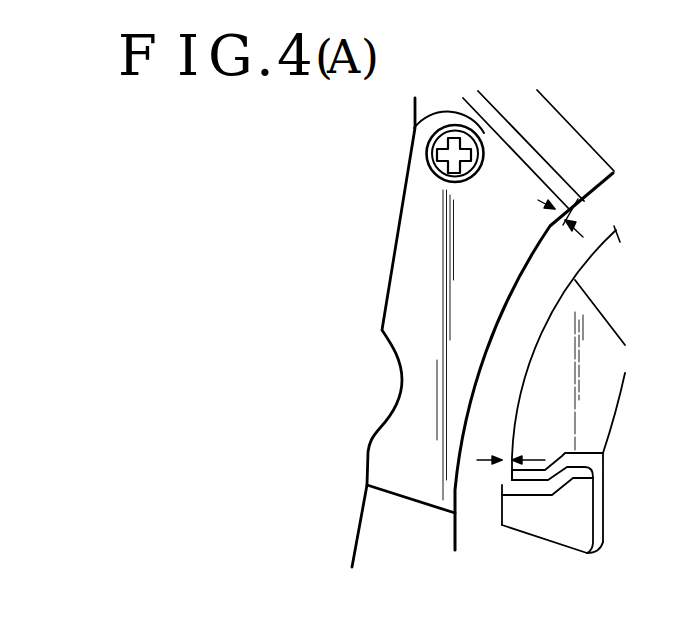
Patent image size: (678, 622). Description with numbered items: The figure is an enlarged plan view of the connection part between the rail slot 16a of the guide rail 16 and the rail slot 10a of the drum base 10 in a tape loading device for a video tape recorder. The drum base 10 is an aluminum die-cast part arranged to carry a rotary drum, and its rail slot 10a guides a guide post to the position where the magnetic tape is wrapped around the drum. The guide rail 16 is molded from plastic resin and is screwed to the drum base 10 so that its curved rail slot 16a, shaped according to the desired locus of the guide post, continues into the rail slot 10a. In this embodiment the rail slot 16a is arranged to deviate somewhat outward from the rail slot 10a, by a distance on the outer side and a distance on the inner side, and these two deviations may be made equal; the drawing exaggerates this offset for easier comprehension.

The drum base 10 is at (517, 113).
The rail slot 10a is at (612, 197).
The guide rail 16 is at (413, 248).
The rail slot 16a is at (477, 523).